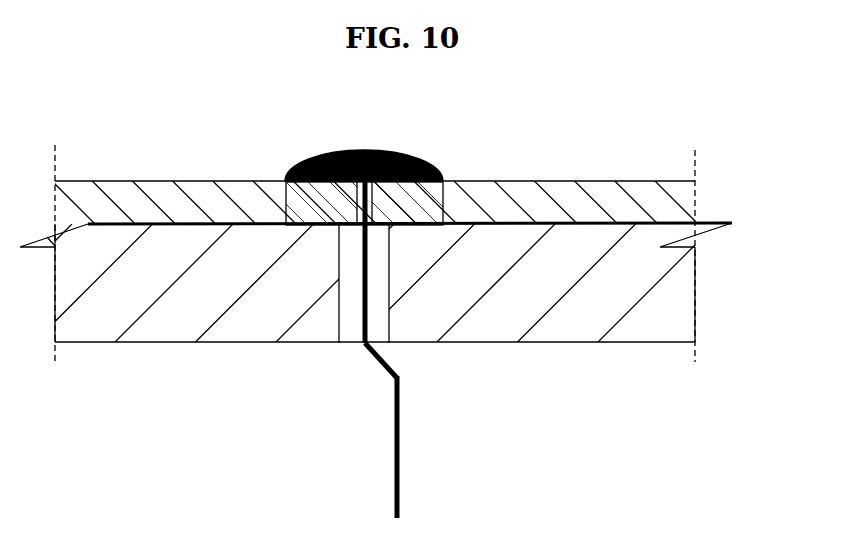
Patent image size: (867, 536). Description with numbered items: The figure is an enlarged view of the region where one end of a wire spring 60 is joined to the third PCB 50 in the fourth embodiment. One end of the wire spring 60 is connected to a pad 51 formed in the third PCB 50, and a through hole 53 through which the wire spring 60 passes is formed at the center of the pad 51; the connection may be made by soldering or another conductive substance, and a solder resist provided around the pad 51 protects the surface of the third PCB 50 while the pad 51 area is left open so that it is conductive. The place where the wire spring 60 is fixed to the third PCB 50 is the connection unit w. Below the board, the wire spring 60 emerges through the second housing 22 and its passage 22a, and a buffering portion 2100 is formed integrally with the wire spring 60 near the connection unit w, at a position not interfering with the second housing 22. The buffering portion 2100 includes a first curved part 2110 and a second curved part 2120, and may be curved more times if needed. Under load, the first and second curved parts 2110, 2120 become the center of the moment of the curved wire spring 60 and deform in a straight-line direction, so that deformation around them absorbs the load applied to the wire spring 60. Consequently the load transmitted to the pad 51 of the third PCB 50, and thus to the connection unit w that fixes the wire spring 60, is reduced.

The second housing 22 is at (682, 288).
The through hole 22a is at (344, 294).
The third PCB 50 is at (587, 182).
The pad 51 is at (422, 175).
The through hole 53 is at (355, 210).
The connection unit w is at (312, 160).
The buffering portion 2100 is at (461, 297).
The first curved part 2110 is at (396, 345).
The second curved part 2120 is at (399, 378).
The wire spring 60 is at (400, 497).